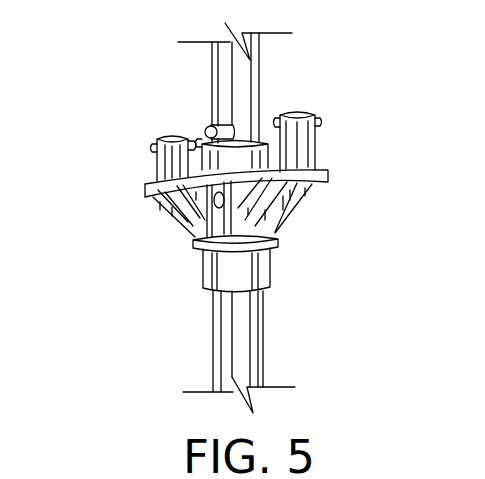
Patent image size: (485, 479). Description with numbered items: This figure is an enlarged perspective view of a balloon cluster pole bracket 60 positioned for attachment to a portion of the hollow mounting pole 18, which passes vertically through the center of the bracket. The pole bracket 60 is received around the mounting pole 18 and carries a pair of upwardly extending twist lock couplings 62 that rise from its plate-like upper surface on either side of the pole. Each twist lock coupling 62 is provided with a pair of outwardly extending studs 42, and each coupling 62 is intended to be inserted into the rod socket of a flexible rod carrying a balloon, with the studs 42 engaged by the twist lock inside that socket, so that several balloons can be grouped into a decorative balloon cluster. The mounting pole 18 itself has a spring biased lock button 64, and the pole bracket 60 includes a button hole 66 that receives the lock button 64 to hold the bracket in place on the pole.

The hollow mounting pole 18 is at (247, 83).
The outwardly extending studs 42 is at (199, 141).
The balloon cluster pole bracket 60 is at (178, 198).
The twist lock couplings 62 is at (168, 163).
The lock button 64 is at (205, 128).
The button hole 66 is at (214, 199).